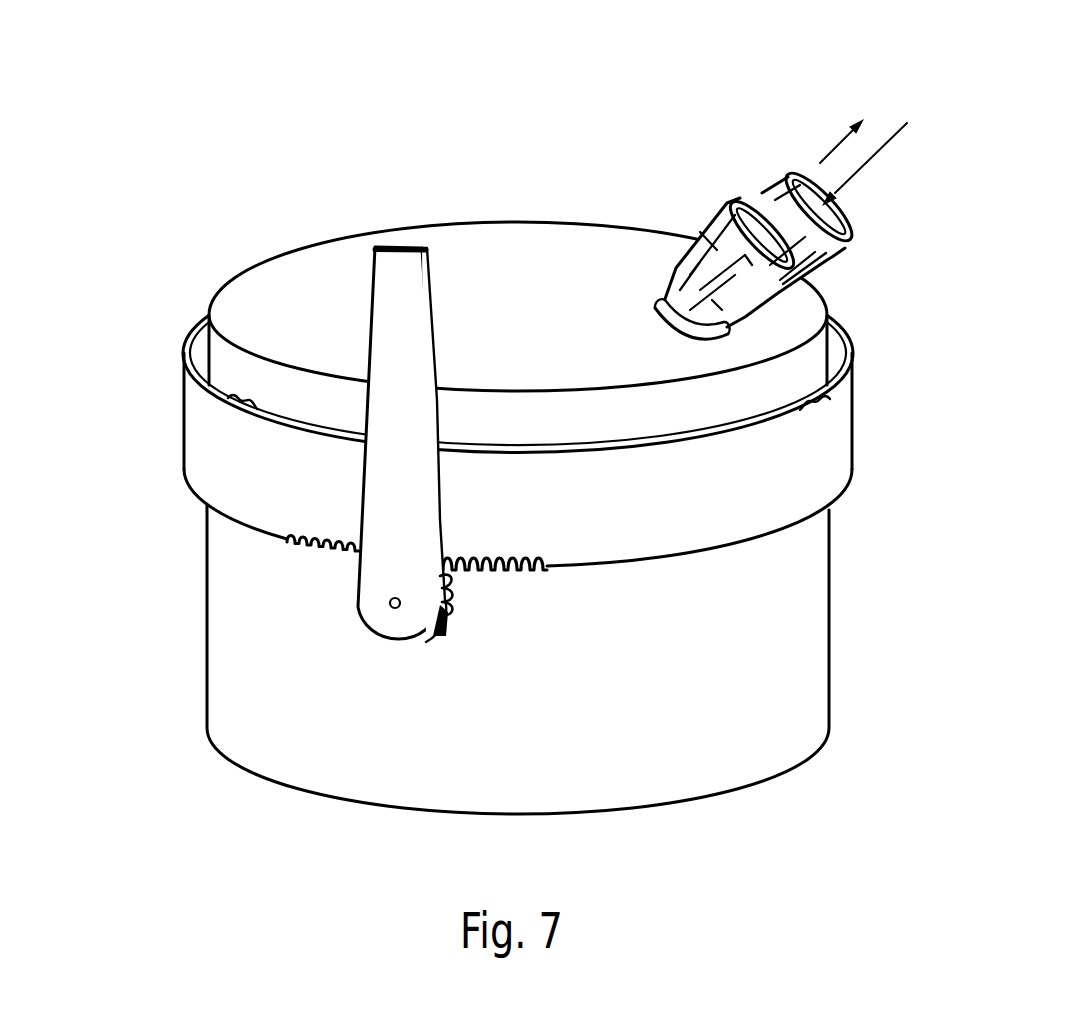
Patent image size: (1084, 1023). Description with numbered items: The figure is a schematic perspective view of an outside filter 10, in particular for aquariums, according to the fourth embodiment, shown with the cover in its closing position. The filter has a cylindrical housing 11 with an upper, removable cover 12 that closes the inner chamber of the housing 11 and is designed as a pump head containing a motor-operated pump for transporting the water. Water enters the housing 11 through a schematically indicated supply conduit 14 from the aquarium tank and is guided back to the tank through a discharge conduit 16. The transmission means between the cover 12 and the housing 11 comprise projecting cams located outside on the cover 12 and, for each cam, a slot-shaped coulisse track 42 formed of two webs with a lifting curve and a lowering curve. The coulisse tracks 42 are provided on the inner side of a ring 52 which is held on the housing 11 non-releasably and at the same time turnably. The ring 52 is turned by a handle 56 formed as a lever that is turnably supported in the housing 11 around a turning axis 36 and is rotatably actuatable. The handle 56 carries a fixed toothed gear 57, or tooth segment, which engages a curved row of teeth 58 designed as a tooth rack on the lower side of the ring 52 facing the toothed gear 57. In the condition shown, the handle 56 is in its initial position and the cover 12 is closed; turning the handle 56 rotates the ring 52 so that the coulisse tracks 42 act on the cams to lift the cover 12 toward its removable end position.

The outside filter 10 is at (860, 545).
The housing 11 is at (782, 645).
The cover 12 is at (797, 317).
The supply conduit 14 is at (870, 160).
The discharge conduit 16 is at (820, 162).
The turning axis 36 is at (393, 610).
The coulisse track 42 is at (243, 413).
The ring 52 is at (823, 478).
The handle 56 is at (400, 307).
The toothed gear 57 is at (450, 628).
The teeth 58 is at (495, 568).